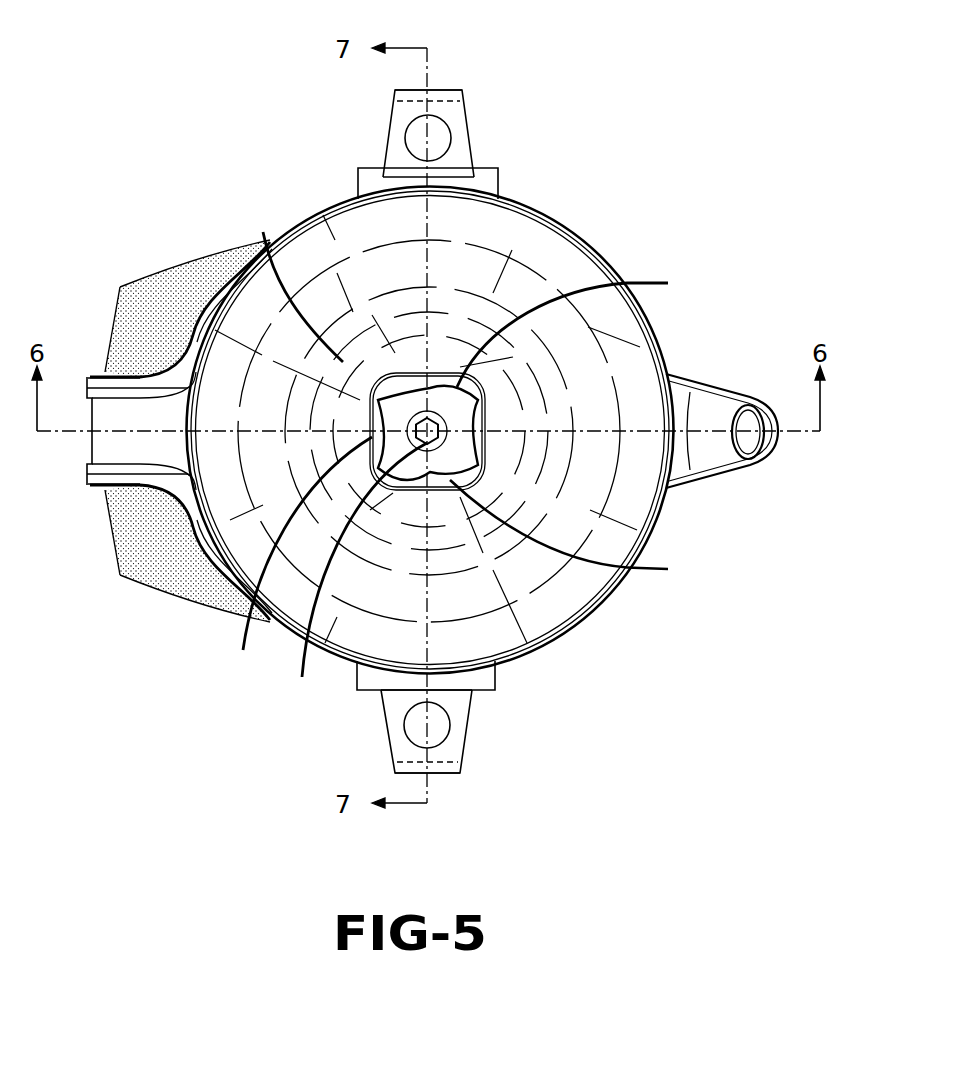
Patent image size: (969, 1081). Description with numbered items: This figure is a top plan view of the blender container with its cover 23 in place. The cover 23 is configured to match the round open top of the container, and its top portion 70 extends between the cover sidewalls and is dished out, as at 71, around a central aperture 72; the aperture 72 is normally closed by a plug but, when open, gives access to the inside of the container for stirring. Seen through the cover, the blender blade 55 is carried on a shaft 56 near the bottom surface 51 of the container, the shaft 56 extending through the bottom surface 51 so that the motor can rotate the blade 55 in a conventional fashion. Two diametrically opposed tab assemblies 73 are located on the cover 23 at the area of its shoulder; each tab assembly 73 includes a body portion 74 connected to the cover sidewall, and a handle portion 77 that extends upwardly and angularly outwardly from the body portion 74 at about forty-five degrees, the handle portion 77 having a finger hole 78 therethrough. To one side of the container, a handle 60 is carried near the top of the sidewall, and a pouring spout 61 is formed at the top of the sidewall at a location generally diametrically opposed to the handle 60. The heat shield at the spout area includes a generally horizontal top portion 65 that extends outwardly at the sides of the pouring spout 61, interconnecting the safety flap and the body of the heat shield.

The cover 23 is at (594, 629).
The bottom surface 51 is at (538, 478).
The blender blade 55 is at (582, 327).
The shaft 56 is at (357, 577).
The handle 60 is at (707, 412).
The pouring spout 61 is at (125, 448).
The top portion 65 is at (140, 300).
The top portion 70 is at (540, 247).
The dished out area 71 is at (263, 232).
The central aperture 72 is at (300, 561).
The tab assembly 73 is at (482, 118).
The body portion 74 is at (373, 180).
The handle portion 77 is at (450, 98).
The finger hole 78 is at (421, 145).